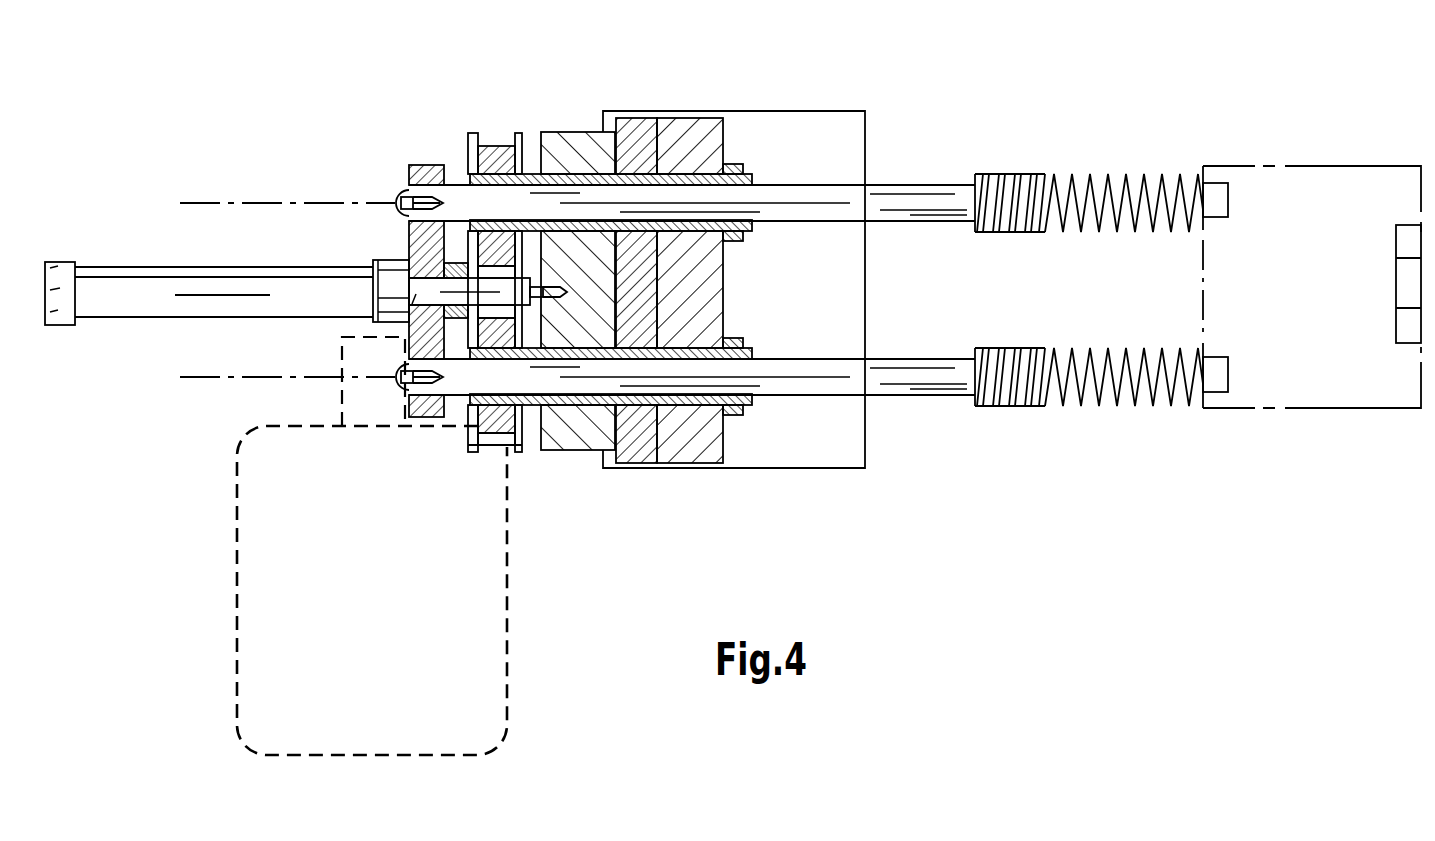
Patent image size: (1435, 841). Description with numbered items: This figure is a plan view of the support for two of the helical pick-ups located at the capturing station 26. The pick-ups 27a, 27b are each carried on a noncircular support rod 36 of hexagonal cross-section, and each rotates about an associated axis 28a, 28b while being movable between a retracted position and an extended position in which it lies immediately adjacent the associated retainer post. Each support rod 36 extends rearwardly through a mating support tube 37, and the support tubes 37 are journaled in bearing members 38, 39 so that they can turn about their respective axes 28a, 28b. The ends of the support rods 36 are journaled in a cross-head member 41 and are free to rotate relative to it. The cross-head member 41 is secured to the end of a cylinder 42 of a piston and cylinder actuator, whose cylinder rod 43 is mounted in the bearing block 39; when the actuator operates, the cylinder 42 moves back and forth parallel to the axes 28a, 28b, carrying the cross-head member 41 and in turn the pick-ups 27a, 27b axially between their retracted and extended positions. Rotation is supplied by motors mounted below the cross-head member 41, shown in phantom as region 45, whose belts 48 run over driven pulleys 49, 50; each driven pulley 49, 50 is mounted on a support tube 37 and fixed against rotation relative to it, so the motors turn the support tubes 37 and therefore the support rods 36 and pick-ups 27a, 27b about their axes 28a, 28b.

The capturing station 26 is at (1280, 452).
The helical pick-up 27a is at (1103, 182).
The helical pick-up 27b is at (1093, 405).
The axis 28a is at (203, 202).
The axis 28b is at (208, 378).
The noncircular support rod 36 is at (904, 195).
The support tube 37 is at (725, 140).
The bearing member 38 is at (693, 140).
The bearing member 39 is at (558, 136).
The cross-head member 41 is at (405, 245).
The cylinder 42 is at (137, 288).
The cylinder rod 43 is at (403, 335).
The housing 45 is at (460, 638).
The belt 48 is at (495, 140).
The driven pulley 49 is at (470, 150).
The driven pulley 50 is at (477, 431).